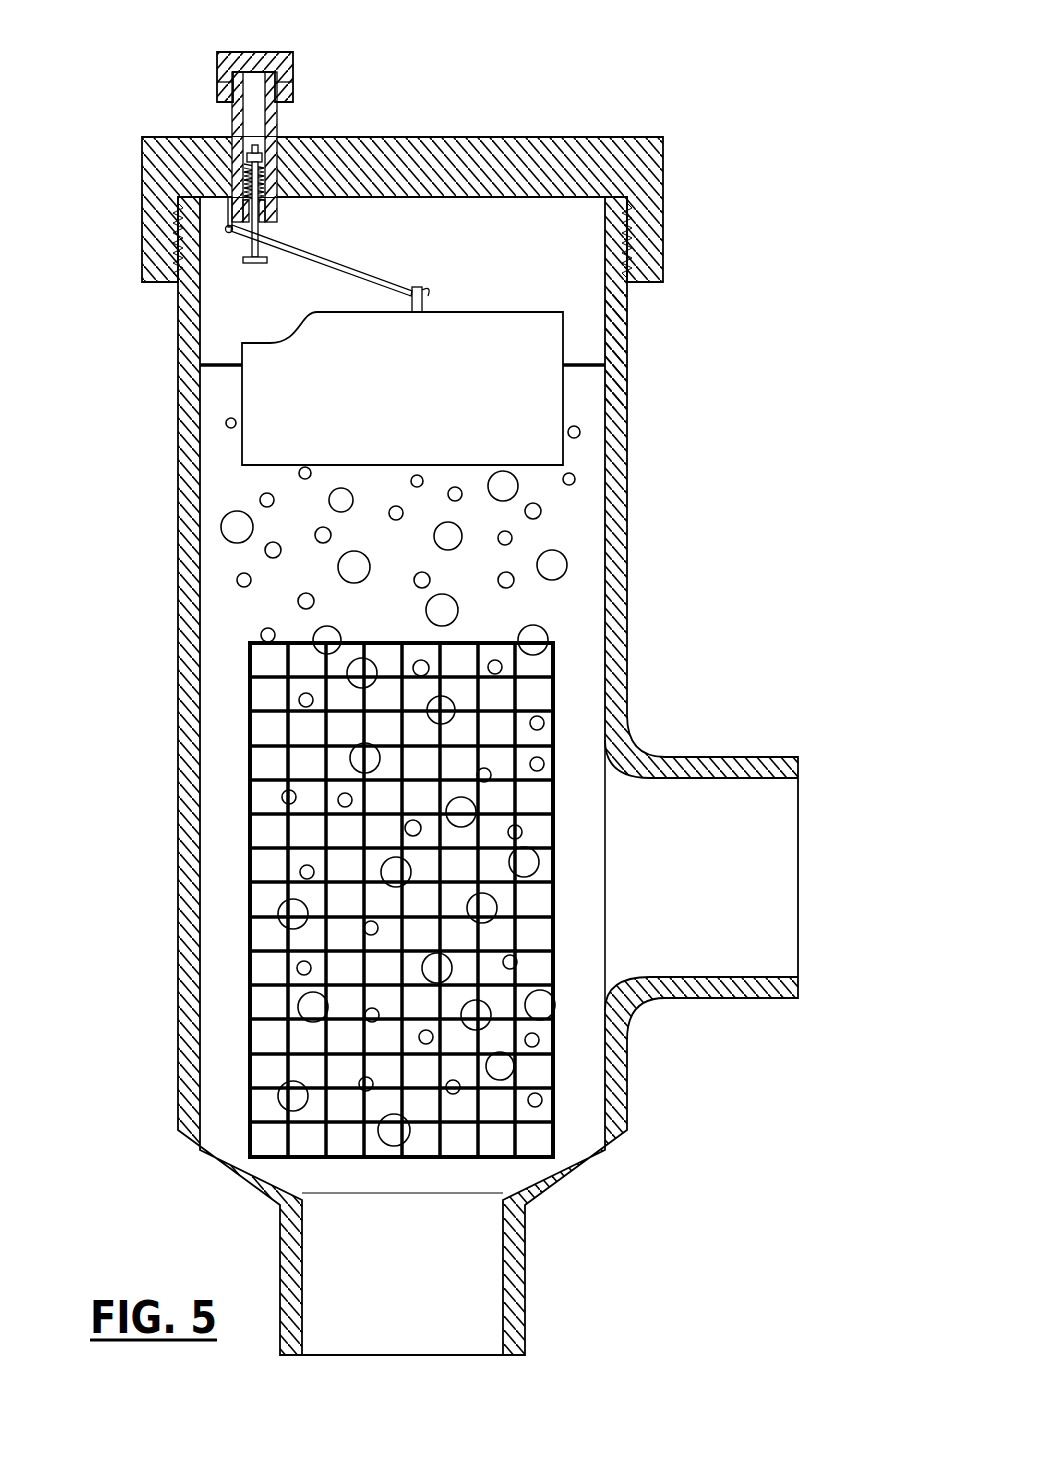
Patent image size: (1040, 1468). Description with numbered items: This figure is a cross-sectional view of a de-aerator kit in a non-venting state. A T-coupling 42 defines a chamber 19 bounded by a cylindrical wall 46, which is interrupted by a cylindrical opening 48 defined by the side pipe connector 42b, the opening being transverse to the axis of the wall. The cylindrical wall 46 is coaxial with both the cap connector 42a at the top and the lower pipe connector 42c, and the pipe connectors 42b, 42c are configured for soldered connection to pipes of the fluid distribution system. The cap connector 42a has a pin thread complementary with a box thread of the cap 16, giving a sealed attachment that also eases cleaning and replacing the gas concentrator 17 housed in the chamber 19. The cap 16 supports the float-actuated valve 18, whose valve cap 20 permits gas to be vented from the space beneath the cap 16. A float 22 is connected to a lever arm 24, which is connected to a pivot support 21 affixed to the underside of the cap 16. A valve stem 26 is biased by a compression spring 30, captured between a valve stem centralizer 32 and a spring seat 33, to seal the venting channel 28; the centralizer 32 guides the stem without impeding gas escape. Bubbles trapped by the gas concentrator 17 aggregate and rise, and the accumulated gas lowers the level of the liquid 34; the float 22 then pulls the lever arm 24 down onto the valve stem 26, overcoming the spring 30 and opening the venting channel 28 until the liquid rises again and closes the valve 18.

The cap 16 is at (678, 205).
The gas concentrator 17 is at (556, 1078).
The float-actuated valve 18 is at (277, 126).
The chamber 19 is at (207, 795).
The valve cap 20 is at (294, 62).
The pivot support 21 is at (226, 230).
The float 22 is at (392, 410).
The lever arm 24 is at (354, 268).
The valve stem 26 is at (262, 232).
The venting channel 28 is at (252, 118).
The compression spring 30 is at (246, 160).
The valve stem centralizer 32 is at (267, 157).
The spring seat 33 is at (240, 199).
The level of the liquid 34 is at (228, 364).
The T-coupling 42 is at (642, 585).
The cap connector 42a is at (616, 332).
The pipe connector 42b is at (766, 757).
The pipe connector 42c is at (526, 1292).
The cylindrical wall 46 is at (200, 928).
The cylindrical opening 48 is at (697, 898).